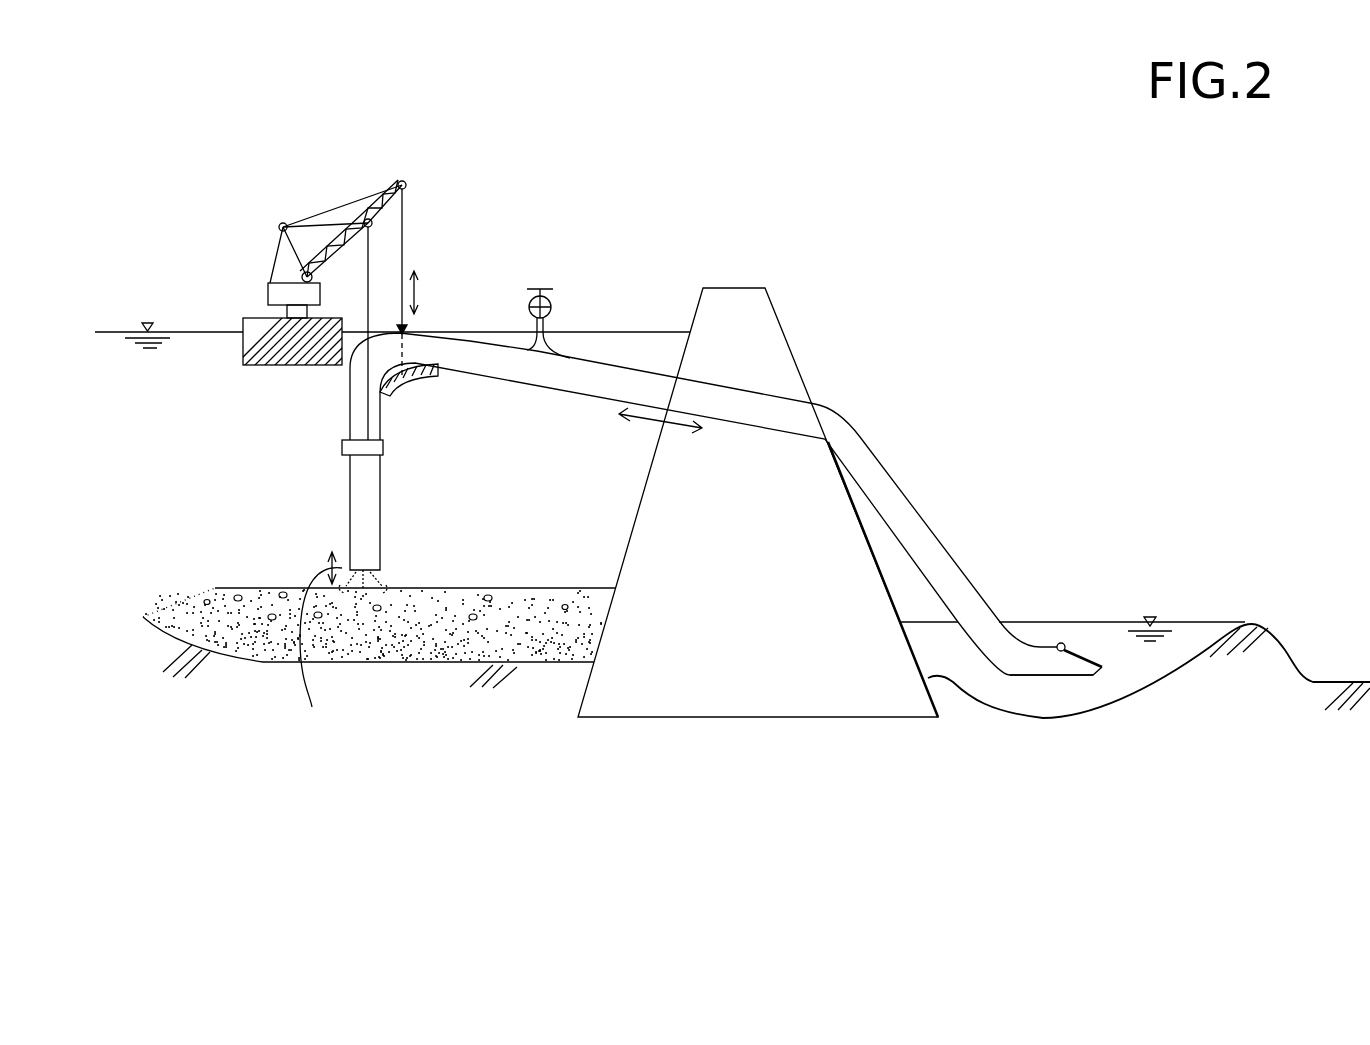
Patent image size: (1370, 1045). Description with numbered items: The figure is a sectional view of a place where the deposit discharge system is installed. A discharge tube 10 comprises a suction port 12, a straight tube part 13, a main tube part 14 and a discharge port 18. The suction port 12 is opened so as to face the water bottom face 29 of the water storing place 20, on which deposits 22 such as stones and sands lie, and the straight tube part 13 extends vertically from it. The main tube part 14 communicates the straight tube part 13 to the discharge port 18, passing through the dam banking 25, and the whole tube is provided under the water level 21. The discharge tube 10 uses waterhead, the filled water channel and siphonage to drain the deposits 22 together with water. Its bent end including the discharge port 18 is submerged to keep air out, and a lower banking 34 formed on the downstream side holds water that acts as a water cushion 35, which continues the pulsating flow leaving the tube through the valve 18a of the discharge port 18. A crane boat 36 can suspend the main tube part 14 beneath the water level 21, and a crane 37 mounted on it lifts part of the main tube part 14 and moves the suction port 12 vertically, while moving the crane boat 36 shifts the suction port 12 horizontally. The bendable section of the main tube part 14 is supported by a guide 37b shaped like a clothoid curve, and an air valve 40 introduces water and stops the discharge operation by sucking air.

The discharge tube 10 is at (614, 364).
The suction port 12 is at (365, 560).
The straight tube part 13 is at (349, 495).
The main tube part 14 is at (492, 357).
The discharge port 18 is at (1077, 670).
The valve 18a is at (1092, 653).
The water storing place 20 is at (193, 380).
The water level 21 is at (110, 330).
The deposits 22 is at (500, 622).
The dam banking 25 is at (733, 286).
The water bottom face 29 is at (444, 600).
The lower banking 34 is at (1250, 627).
The water cushion 35 is at (1115, 630).
The crane boat 36 is at (260, 337).
The crane 37 is at (410, 223).
The guide 37b is at (430, 357).
The air valve 40 is at (563, 290).